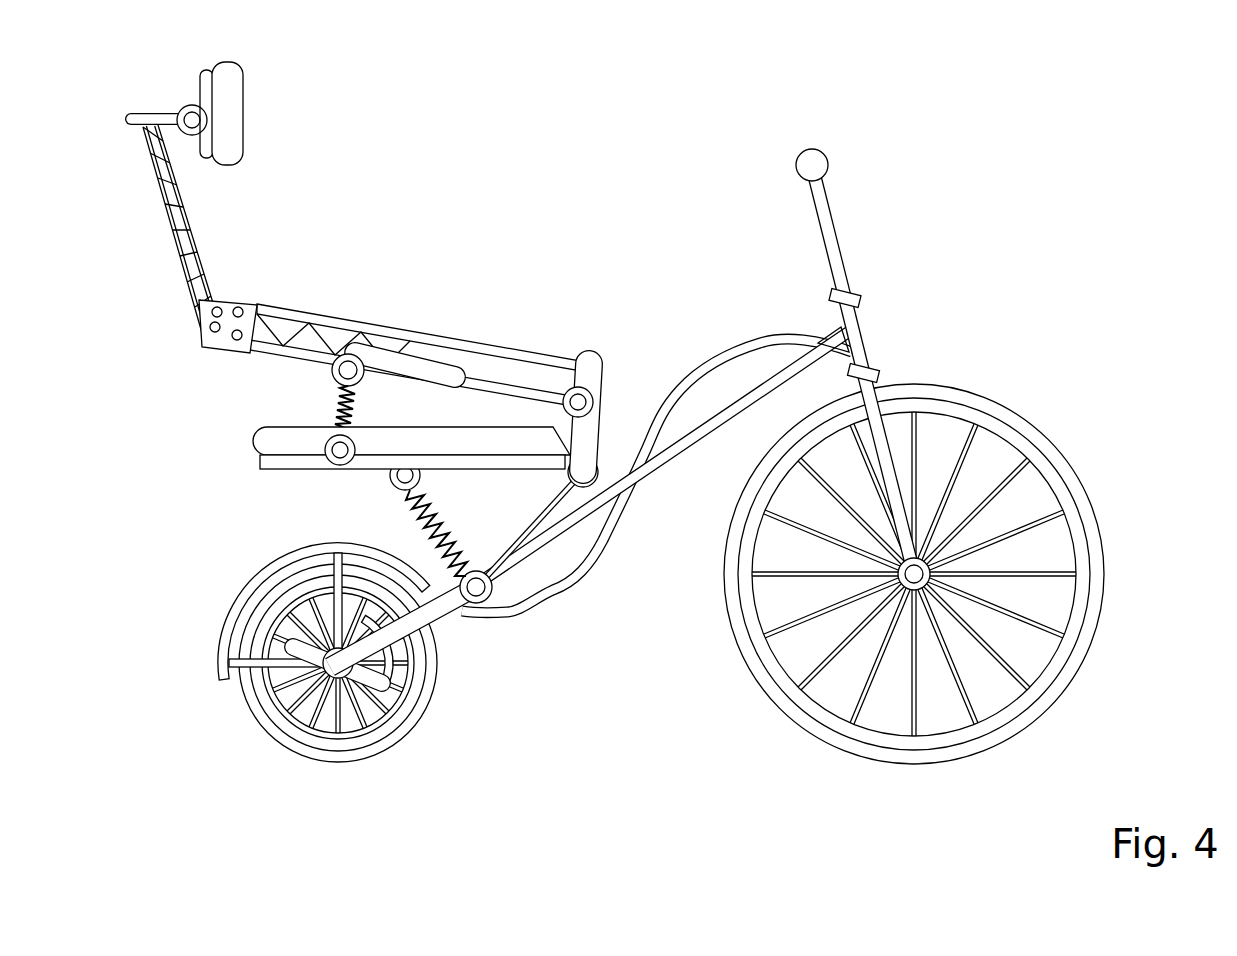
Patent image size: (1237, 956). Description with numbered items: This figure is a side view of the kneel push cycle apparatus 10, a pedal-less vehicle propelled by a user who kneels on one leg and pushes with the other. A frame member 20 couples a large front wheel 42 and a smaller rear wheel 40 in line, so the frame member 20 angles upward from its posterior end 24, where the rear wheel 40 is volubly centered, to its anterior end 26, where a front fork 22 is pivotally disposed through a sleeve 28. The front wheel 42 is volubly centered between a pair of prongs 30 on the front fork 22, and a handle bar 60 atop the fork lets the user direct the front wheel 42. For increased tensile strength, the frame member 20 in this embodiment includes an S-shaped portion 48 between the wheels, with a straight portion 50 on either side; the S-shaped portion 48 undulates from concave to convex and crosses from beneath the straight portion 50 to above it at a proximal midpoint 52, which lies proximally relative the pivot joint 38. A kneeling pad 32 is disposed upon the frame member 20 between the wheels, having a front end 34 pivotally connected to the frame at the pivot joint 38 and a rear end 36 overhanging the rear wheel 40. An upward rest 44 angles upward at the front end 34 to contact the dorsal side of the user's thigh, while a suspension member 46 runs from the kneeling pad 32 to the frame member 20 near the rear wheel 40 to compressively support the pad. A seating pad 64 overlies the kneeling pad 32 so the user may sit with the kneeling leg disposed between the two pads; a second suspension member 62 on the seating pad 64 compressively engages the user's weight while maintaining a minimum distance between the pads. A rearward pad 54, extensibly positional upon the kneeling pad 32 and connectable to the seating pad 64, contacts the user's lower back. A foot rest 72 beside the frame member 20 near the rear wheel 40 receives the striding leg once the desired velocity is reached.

The kneel push cycle apparatus 10 is at (1108, 97).
The frame member 20 is at (678, 342).
The front fork 22 is at (893, 374).
The posterior end 24 is at (397, 703).
The anterior end 26 is at (835, 322).
The sleeve 28 is at (855, 340).
The prongs 30 is at (893, 487).
The kneeling pad 32 is at (238, 412).
The front end 34 is at (563, 460).
The rear end 36 is at (253, 462).
The pivot joint 38 is at (583, 482).
The rear wheel 40 is at (385, 757).
The front wheel 42 is at (1080, 488).
The upward rest 44 is at (603, 378).
The suspension member 46 is at (418, 525).
The S-shaped portion 48 is at (732, 340).
The straight portion 50 is at (720, 400).
The proximal midpoint 52 is at (625, 463).
The rearward pad 54 is at (263, 98).
The handle bar 60 is at (822, 152).
The second suspension member 62 is at (332, 410).
The seating pad 64 is at (437, 370).
The foot rest 72 is at (400, 672).